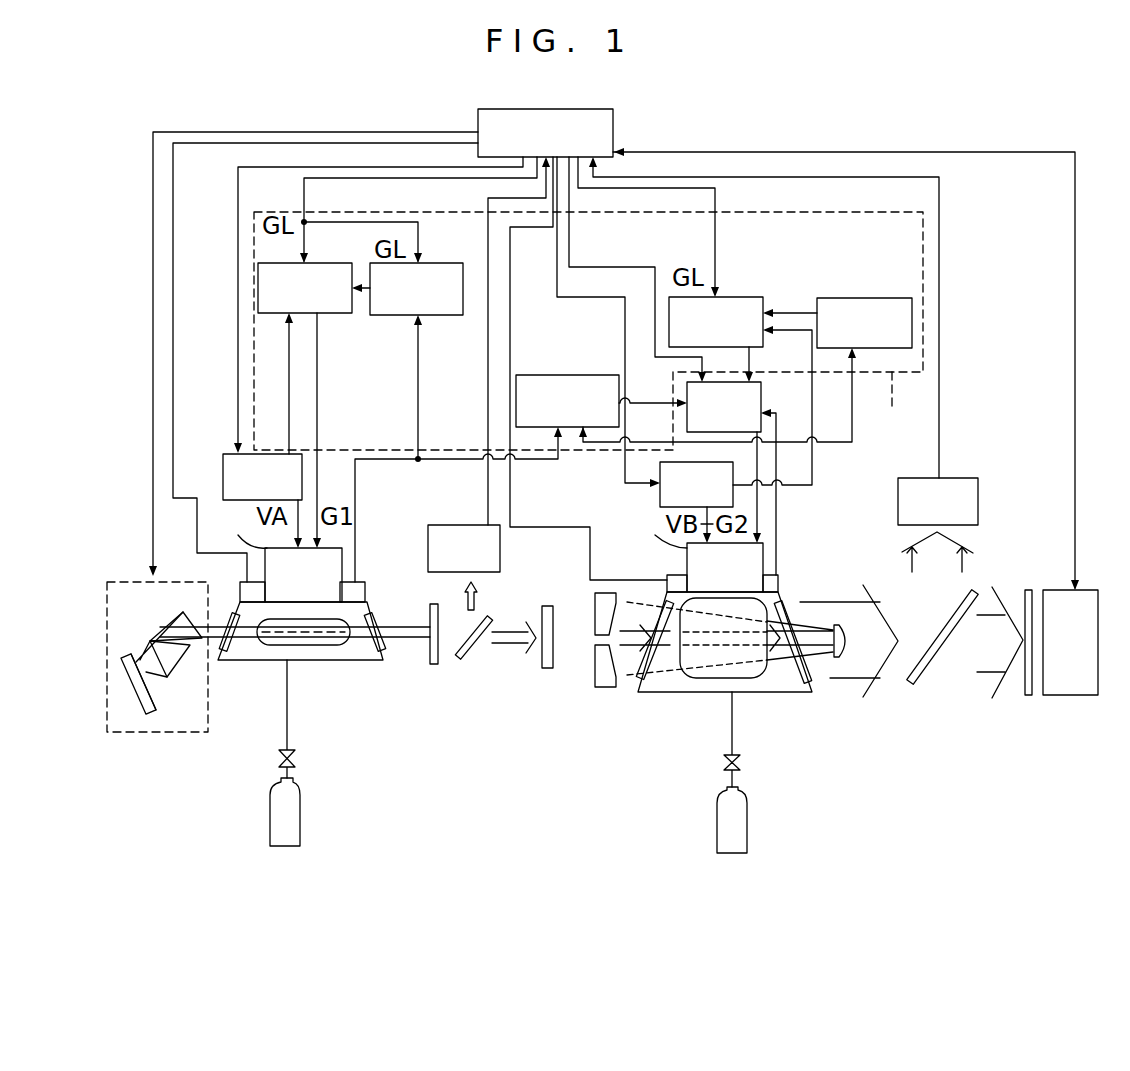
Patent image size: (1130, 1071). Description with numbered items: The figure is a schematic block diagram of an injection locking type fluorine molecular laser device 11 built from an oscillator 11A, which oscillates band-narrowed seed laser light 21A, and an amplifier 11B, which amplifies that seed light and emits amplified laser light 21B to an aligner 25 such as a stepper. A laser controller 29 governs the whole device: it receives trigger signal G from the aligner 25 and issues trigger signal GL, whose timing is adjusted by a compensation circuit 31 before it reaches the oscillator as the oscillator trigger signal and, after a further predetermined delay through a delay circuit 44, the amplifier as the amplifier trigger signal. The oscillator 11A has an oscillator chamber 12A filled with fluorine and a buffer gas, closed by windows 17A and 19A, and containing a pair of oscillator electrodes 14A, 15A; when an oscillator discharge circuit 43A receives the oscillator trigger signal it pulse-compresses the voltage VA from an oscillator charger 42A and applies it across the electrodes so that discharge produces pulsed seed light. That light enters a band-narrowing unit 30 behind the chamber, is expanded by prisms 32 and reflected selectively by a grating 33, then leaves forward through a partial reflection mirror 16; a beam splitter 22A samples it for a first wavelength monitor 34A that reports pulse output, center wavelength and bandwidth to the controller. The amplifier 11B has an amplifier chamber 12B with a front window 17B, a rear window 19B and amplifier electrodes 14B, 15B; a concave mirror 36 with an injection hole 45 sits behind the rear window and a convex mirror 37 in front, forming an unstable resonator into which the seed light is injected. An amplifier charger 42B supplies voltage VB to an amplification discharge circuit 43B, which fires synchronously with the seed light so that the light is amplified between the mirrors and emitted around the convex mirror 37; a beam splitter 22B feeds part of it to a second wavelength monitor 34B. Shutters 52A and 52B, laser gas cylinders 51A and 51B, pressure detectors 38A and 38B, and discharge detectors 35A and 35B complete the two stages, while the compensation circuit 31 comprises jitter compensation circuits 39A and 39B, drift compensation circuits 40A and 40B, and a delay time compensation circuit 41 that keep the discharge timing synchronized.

The fluorine molecular laser device 11 is at (780, 151).
The laser controller 29 is at (605, 109).
The band-narrowing unit 30 is at (157, 627).
The compensation circuit 31 is at (892, 405).
The prism 32 is at (166, 628).
The grating 33 is at (131, 652).
The wavelength monitor 34A is at (455, 525).
The wavelength monitor 34B is at (962, 478).
The oscillator discharge detector 35A is at (360, 582).
The amplification discharge detector 35B is at (778, 575).
The concave mirror with a hole 36 is at (591, 660).
The convex mirror 37 is at (838, 623).
The pressure detector 38A is at (247, 578).
The pressure detector 38B is at (667, 580).
The jitter compensation circuit 39A is at (318, 263).
The jitter compensation circuit 39B is at (748, 295).
The drift compensation circuit 40A is at (437, 263).
The drift compensation circuit 40B is at (866, 297).
The delay time compensation circuit 41 is at (563, 375).
The oscillator charger 42A is at (223, 466).
The amplifier charger 42B is at (660, 497).
The oscillator discharge circuit 43A is at (233, 528).
The amplification discharge circuit 43B is at (646, 533).
The delay circuit 44 is at (762, 392).
The injection hole 45 is at (596, 636).
The oscillator chamber 12A is at (335, 675).
The amplifier chamber 12B is at (727, 690).
The oscillator electrode 14A is at (324, 668).
The oscillator electrode 15A is at (318, 645).
The amplifier electrode 14B is at (693, 693).
The amplifier electrode 15B is at (677, 660).
The partial reflection mirror 16 is at (442, 665).
The window 17A is at (384, 655).
The front window 17B is at (805, 670).
The window 19A is at (228, 652).
The rear window 19B is at (637, 665).
The seed laser light 21A is at (389, 625).
The amplified laser light 21B is at (850, 682).
The beam splitter 22A is at (493, 617).
The beam splitter 22B is at (978, 592).
The aligner 25 is at (1080, 697).
The shutter 52A is at (547, 670).
The shutter 52B is at (1028, 697).
The oscillator 11A is at (277, 667).
The amplifier 11B is at (737, 703).
The laser gas cylinder 51A is at (300, 823).
The laser gas cylinder 51B is at (747, 835).